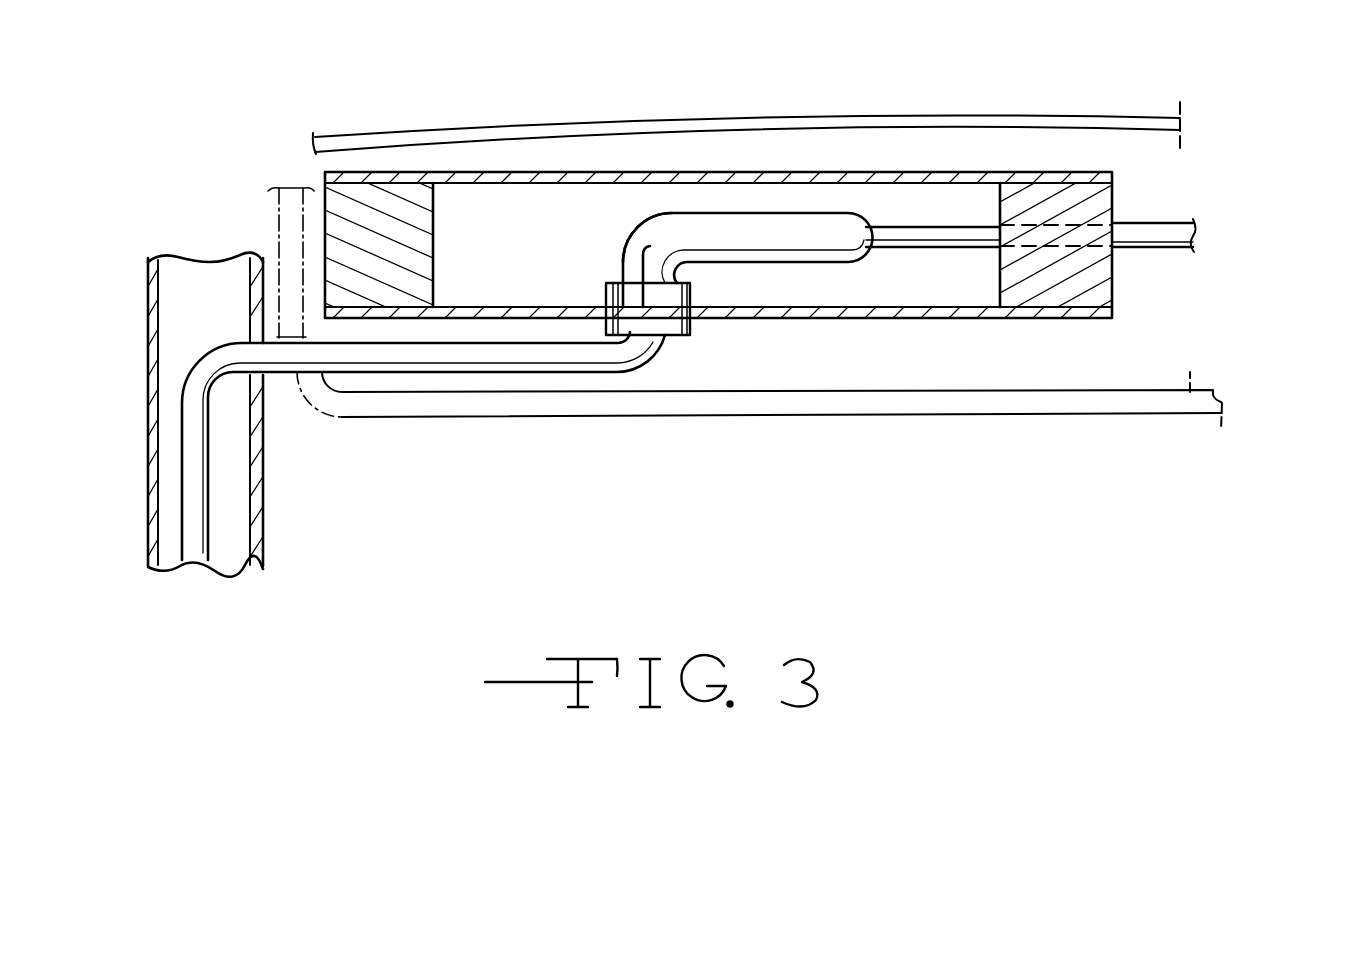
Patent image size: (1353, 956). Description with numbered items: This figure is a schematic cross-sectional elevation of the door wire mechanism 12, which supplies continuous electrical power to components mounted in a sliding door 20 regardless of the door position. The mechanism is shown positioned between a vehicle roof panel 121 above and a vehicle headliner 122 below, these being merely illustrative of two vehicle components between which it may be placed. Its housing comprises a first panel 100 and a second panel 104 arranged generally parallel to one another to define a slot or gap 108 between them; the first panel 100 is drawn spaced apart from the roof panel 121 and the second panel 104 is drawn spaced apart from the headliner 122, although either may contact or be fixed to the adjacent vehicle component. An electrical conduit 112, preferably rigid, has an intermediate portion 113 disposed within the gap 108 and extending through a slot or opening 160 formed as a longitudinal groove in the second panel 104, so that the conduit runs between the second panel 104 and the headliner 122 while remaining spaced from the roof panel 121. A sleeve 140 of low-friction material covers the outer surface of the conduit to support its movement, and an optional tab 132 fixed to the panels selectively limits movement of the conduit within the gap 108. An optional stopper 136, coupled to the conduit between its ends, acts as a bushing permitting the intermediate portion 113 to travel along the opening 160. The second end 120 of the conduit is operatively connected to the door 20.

The door wire mechanism 12 is at (324, 176).
The door 20 is at (265, 512).
The first panel 100 is at (853, 172).
The second panel 104 is at (853, 320).
The slot or gap 108 is at (472, 215).
The electrical conduit 112 is at (957, 247).
The intermediate portion 113 is at (923, 227).
The second end 120 is at (278, 376).
The vehicle roof panel 121 is at (1180, 100).
The vehicle headliner 122 is at (1190, 372).
The tab 132 is at (1045, 190).
The stopper 136 is at (693, 337).
The sleeve 140 is at (727, 212).
The slot or opening 160 is at (633, 237).